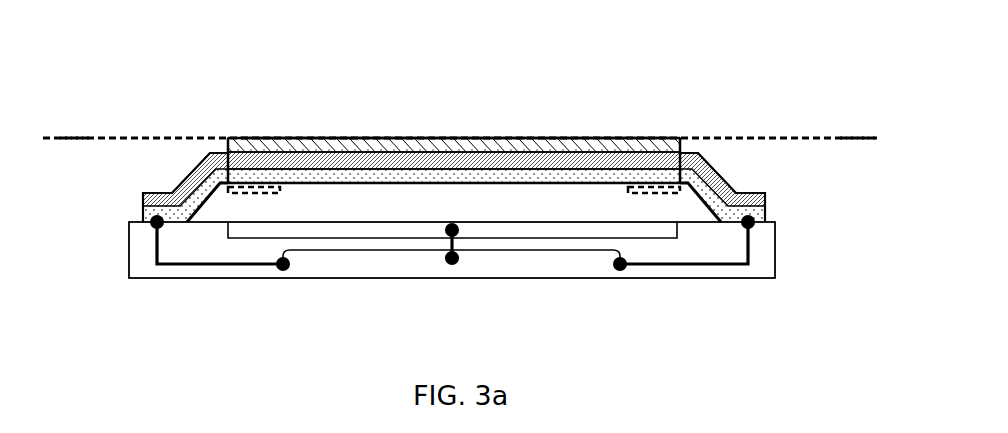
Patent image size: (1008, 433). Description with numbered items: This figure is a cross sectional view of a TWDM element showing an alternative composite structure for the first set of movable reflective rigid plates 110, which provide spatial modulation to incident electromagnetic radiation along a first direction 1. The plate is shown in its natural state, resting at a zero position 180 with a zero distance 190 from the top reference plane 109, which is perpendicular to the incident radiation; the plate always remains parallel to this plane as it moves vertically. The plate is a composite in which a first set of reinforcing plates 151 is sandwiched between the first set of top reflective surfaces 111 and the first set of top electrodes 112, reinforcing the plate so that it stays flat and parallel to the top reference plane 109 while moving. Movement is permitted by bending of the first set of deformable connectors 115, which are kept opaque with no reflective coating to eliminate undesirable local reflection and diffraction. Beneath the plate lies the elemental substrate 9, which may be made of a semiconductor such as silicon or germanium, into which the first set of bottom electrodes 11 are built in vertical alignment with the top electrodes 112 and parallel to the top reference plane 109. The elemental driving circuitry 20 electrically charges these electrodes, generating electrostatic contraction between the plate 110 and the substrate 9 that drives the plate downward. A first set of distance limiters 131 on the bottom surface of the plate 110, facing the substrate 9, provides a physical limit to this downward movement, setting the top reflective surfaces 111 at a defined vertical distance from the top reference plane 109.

The first direction 1 is at (679, 95).
The elemental substrate 9 is at (128, 278).
The first set of bottom electrodes 11 is at (241, 228).
The elemental driving circuitry 20 is at (598, 266).
The top reference plane 109 is at (852, 137).
The first set of movable reflective rigid plates 110 is at (454, 120).
The first set of top reflective surfaces 111 is at (597, 137).
The first set of top electrodes 112 is at (464, 219).
The first set of deformable connectors 115 is at (176, 162).
The first set of distance limiters 131 is at (280, 190).
The first set of reinforcing plates 151 is at (522, 165).
The zero position 180 is at (460, 125).
The zero distance 190 is at (74, 130).